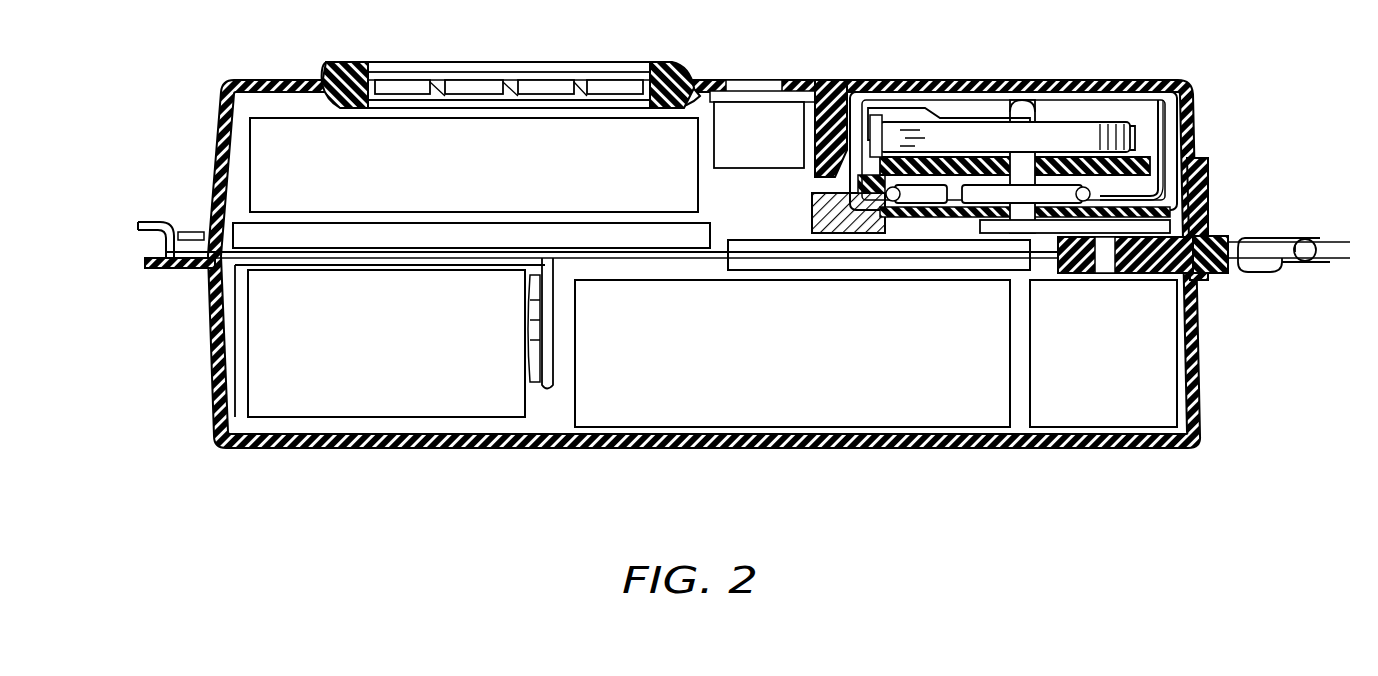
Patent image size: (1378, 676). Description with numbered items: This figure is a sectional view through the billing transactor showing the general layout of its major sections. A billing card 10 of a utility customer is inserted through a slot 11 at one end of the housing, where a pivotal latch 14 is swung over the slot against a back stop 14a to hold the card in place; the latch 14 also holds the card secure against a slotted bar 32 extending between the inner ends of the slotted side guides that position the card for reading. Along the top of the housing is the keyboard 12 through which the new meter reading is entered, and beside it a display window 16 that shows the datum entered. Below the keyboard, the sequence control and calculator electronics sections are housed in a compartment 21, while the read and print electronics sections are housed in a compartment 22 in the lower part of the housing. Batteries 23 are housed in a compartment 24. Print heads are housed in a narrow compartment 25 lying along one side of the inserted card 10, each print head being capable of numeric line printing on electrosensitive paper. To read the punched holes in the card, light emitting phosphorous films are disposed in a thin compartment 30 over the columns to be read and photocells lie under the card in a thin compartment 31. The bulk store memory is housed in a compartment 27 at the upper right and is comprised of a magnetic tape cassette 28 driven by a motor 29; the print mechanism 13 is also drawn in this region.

The billing card 10 is at (190, 252).
The slot 11 is at (154, 245).
The keyboard 12 is at (568, 60).
The print mechanism 13 is at (1083, 104).
The latch 14 is at (152, 222).
The back stop 14a is at (150, 268).
The display window 16 is at (749, 78).
The compartment 21 is at (262, 140).
The compartment 22 is at (800, 413).
The batteries 23 is at (268, 347).
The compartment 24 is at (374, 405).
The narrow compartment 25 is at (471, 235).
The compartment 27 is at (1132, 102).
The magnetic tape cassette 28 is at (968, 108).
The motor 29 is at (1153, 352).
The thin compartment 30 is at (778, 245).
The thin compartment 31 is at (745, 262).
The slotted bar 32 is at (1060, 273).